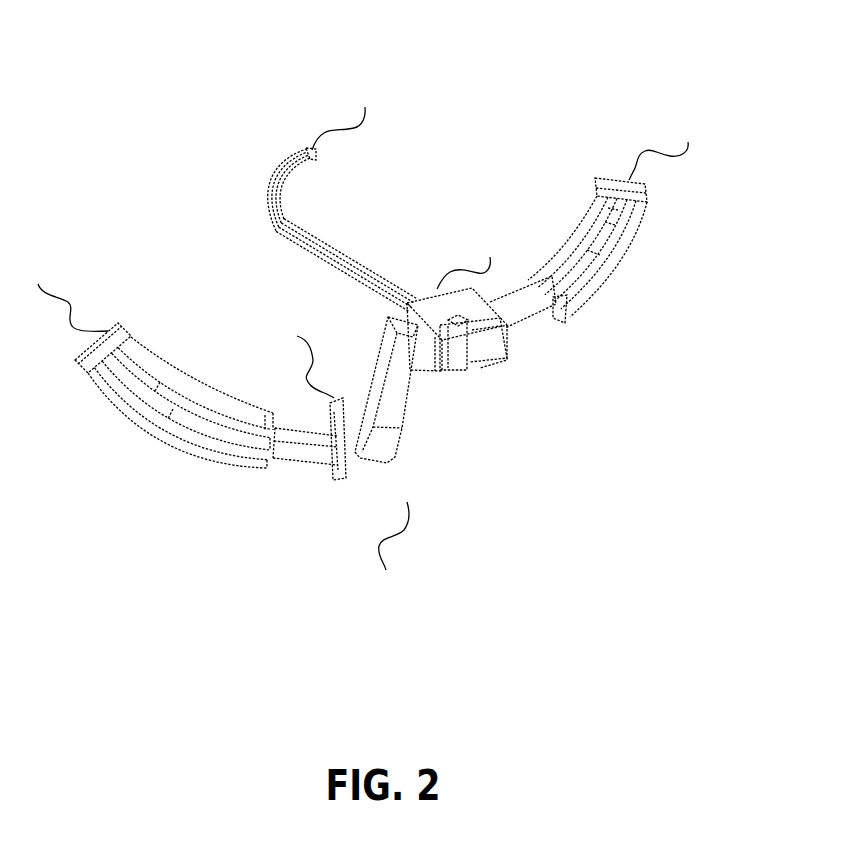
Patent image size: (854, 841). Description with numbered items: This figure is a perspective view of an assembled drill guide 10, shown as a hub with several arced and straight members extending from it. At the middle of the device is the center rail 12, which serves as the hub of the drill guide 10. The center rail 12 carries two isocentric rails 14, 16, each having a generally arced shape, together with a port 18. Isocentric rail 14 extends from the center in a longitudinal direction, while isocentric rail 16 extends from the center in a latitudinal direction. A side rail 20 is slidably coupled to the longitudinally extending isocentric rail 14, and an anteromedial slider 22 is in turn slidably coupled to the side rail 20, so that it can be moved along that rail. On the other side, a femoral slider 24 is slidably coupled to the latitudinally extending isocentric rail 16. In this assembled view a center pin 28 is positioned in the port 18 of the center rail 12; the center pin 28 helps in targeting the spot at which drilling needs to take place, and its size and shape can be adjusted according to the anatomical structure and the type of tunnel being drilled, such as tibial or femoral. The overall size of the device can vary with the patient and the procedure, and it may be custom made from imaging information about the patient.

The drill guide 10 is at (421, 380).
The center rail 12 is at (431, 310).
The isocentric rail 14 is at (387, 425).
The isocentric rail 16 is at (522, 310).
The port 18 is at (447, 342).
The side rail 20 is at (307, 462).
The anteromedial slider 22 is at (92, 377).
The femoral slider 24 is at (643, 202).
The center pin 28 is at (276, 211).